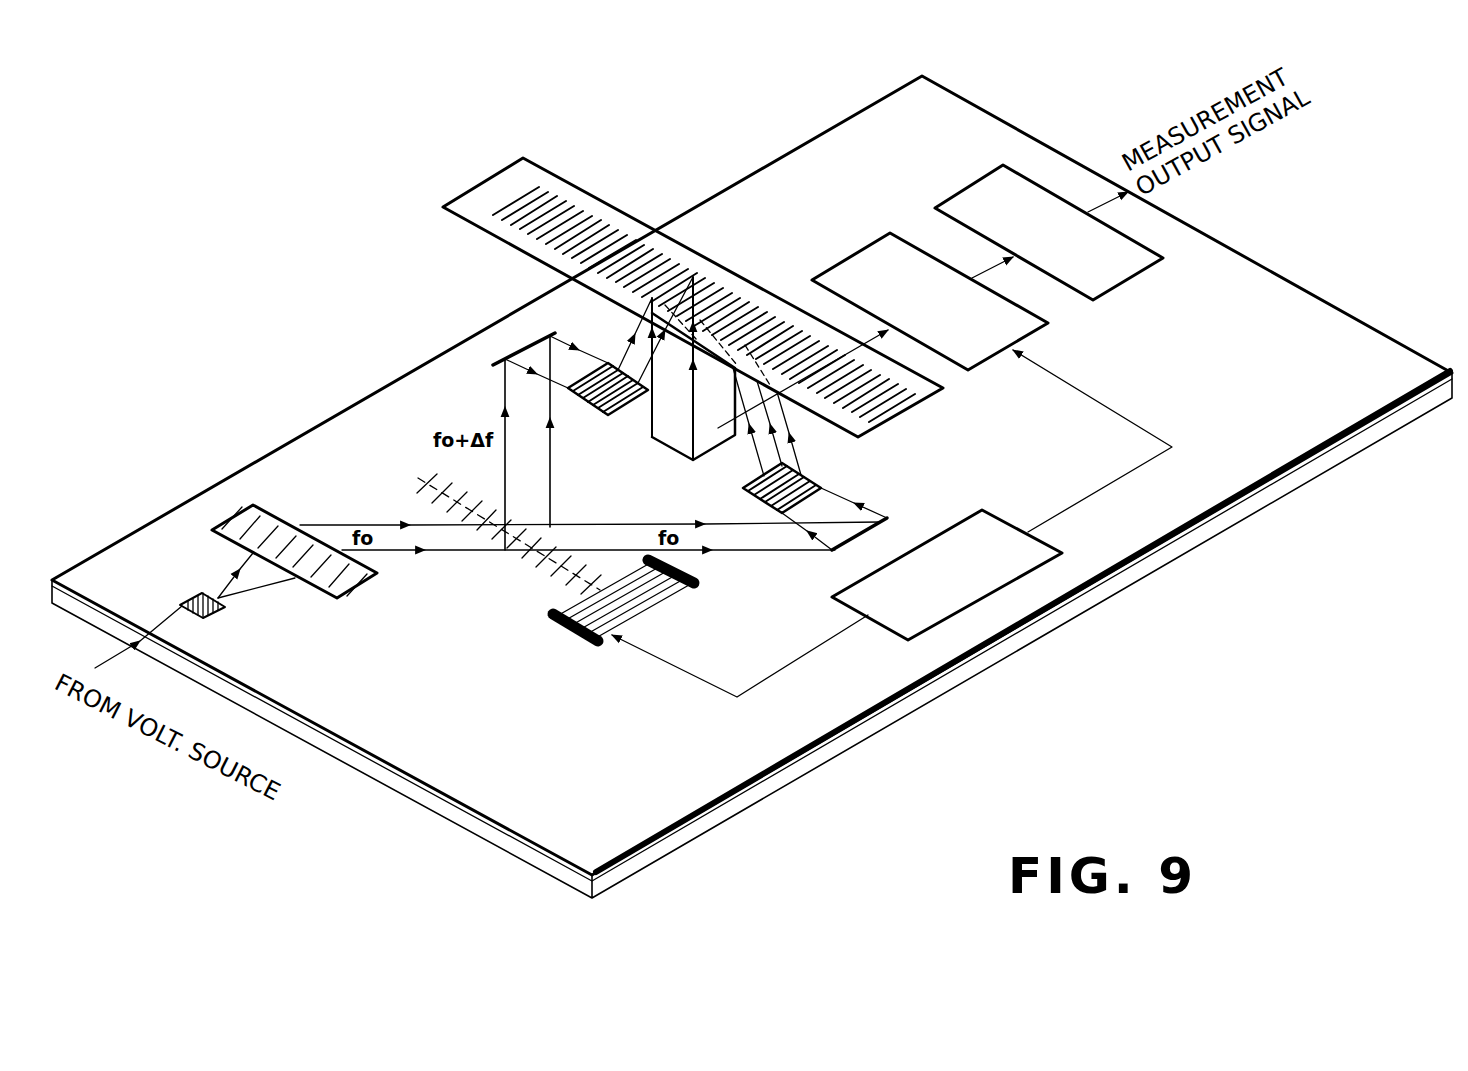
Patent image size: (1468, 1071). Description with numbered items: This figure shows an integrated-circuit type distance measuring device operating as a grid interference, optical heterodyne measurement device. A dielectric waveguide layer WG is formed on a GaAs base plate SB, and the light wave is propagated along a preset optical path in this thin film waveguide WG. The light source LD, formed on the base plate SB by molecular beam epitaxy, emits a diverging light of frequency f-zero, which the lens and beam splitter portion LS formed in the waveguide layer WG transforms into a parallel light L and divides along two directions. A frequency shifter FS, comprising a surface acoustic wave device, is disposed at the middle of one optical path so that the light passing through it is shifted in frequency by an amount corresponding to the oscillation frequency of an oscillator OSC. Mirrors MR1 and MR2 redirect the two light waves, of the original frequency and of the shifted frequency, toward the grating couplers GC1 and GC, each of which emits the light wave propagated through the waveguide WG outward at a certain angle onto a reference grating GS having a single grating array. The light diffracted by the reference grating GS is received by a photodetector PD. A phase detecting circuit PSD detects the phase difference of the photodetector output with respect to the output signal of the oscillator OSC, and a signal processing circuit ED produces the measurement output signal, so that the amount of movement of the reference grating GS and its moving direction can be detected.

The base plate SB is at (840, 758).
The dielectric waveguide layer WG is at (945, 671).
The reference grating GS is at (597, 199).
The light source LD is at (215, 613).
The lens and beam splitter portion LS is at (367, 581).
The light beam L is at (757, 551).
The frequency shifter FS is at (577, 629).
The first mirror MR1 is at (503, 359).
The grating coupler GC1 is at (588, 403).
The photodetector PD is at (662, 445).
The grating coupler GC is at (745, 491).
The second mirror MR2 is at (888, 519).
The oscillator OSC is at (1047, 544).
The phase detecting circuit PSD is at (1042, 328).
The signal processing circuit ED is at (1148, 268).